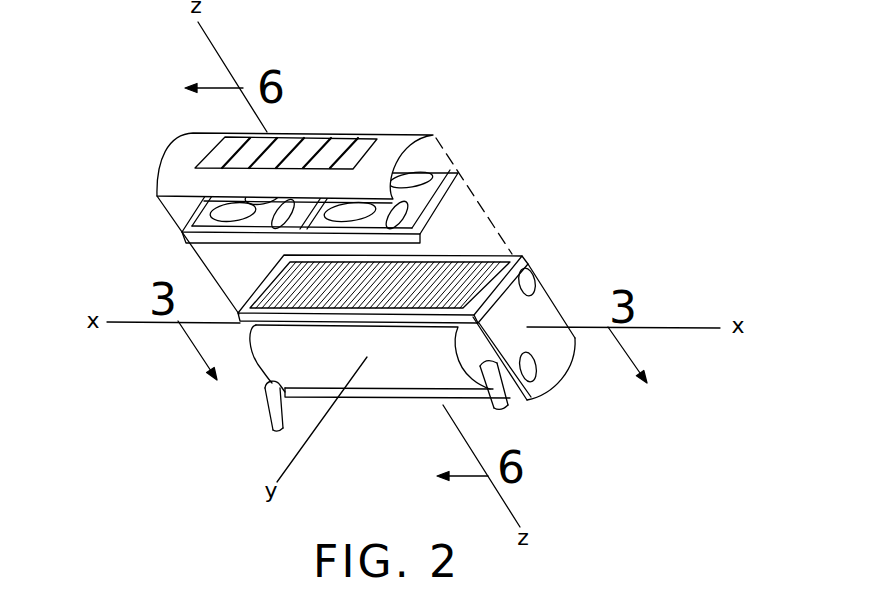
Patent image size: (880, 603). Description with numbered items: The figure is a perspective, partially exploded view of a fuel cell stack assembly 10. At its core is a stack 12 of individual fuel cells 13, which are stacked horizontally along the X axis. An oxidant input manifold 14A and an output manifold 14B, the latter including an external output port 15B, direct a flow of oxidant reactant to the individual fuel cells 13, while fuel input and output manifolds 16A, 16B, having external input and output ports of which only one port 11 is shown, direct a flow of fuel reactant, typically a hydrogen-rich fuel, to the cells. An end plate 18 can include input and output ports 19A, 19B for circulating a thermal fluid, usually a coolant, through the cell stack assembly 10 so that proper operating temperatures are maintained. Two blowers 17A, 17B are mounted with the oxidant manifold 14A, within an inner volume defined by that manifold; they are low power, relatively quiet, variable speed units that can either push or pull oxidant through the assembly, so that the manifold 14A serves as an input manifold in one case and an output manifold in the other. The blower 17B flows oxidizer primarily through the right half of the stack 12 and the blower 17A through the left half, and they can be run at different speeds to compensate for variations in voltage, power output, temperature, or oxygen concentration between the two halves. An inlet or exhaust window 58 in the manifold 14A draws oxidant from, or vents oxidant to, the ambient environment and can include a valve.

The fuel cell stack assembly 10 is at (382, 263).
The port 11 is at (497, 402).
The stack 12 is at (233, 273).
The individual fuel cells 13 is at (348, 261).
The oxidant input manifold 14A is at (310, 138).
The output manifold 14B is at (551, 384).
The external output port 15B is at (266, 411).
The fuel input manifold 16A is at (554, 291).
The fuel output manifold 16B is at (421, 399).
The blower 17A is at (201, 204).
The blower 17B is at (424, 176).
The end plate 18 is at (554, 347).
The input port 19A is at (528, 384).
The output port 19B is at (533, 271).
The inlet or exhaust window 58 is at (327, 152).